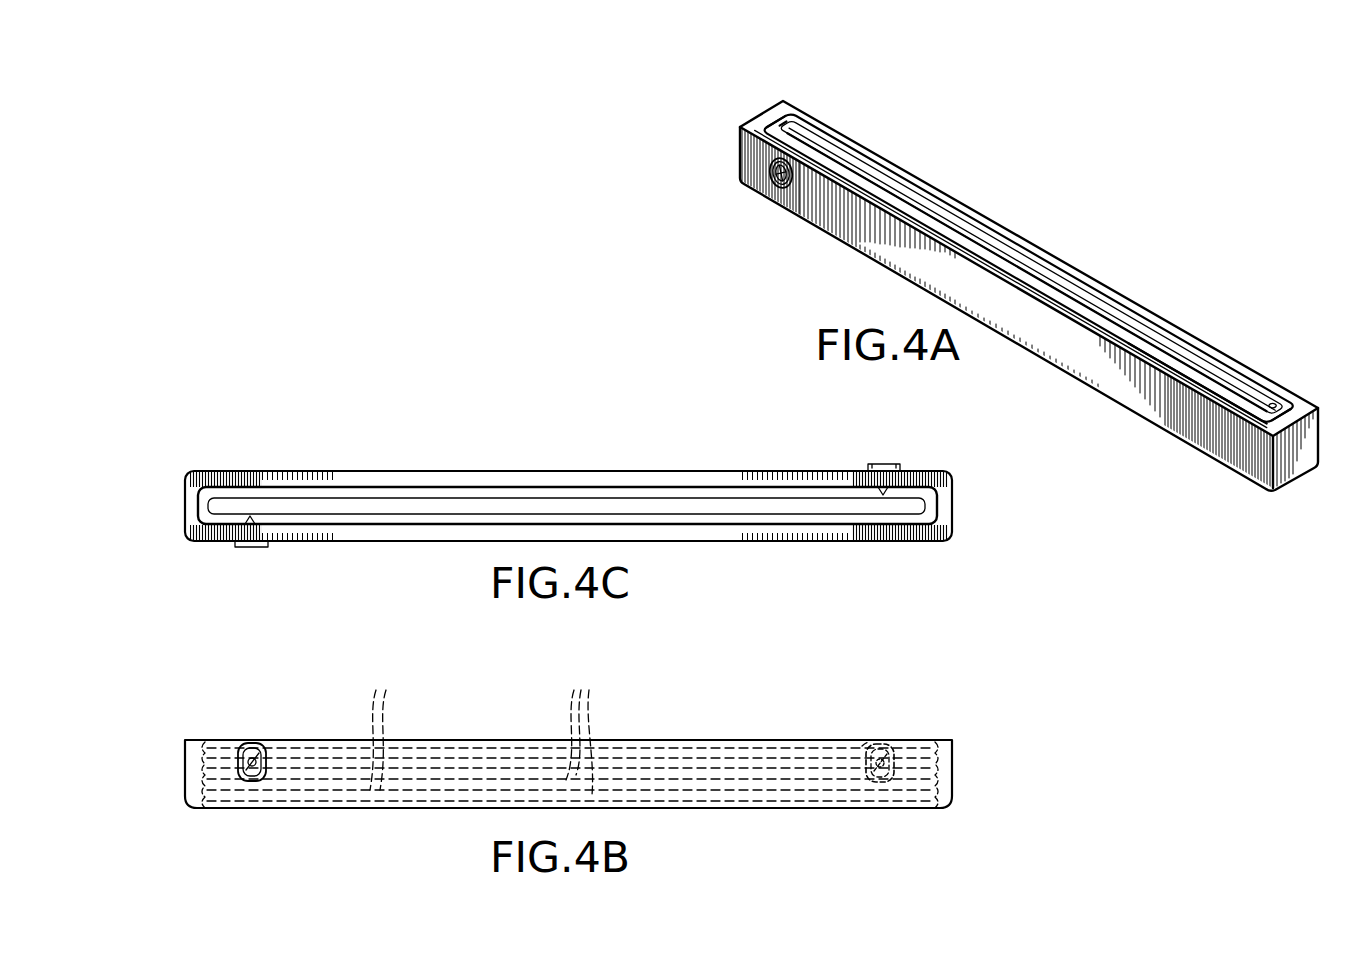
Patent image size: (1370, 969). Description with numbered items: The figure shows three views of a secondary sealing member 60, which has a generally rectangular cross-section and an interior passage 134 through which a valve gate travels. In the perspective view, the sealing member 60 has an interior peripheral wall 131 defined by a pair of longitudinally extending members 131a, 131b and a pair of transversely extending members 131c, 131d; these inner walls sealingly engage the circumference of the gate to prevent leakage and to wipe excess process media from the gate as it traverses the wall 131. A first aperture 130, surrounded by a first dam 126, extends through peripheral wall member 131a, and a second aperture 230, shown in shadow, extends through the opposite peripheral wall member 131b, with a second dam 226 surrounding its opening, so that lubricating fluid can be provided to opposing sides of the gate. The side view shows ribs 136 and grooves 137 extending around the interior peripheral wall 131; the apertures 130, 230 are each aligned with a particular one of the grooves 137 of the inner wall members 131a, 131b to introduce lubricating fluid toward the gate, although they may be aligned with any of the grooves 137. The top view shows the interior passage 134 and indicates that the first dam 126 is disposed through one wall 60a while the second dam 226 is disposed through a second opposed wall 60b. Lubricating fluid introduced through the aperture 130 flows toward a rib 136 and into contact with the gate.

In FIG. 4A, the secondary sealing member 60 is at (700, 105).
In FIG. 4C, the secondary sealing member 60 is at (618, 444).
In FIG. 4C, the wall 60a is at (350, 530).
In FIG. 4C, the second opposed wall 60b is at (462, 480).
In FIG. 4A, the first dam 126 is at (783, 190).
In FIG. 4C, the first dam 126 is at (250, 547).
In FIG. 4B, the first dam 126 is at (250, 778).
In FIG. 4A, the first aperture 130 is at (770, 172).
In FIG. 4B, the first aperture 130 is at (254, 745).
In FIG. 4C, the interior peripheral wall 131 is at (730, 505).
In FIG. 4A, the longitudinally extending member 131a is at (1160, 365).
In FIG. 4A, the longitudinally extending member 131b is at (1072, 275).
In FIG. 4A, the transversely extending member 131c is at (1292, 413).
In FIG. 4A, the transversely extending member 131d is at (768, 115).
In FIG. 4A, the interior passage 134 is at (961, 206).
In FIG. 4C, the interior passage 134 is at (318, 500).
In FIG. 4B, the ribs 136 is at (585, 727).
In FIG. 4B, the grooves 137 is at (390, 724).
In FIG. 4C, the second dam 226 is at (883, 453).
In FIG. 4B, the second dam 226 is at (862, 745).
In FIG. 4B, the second aperture 230 is at (885, 742).